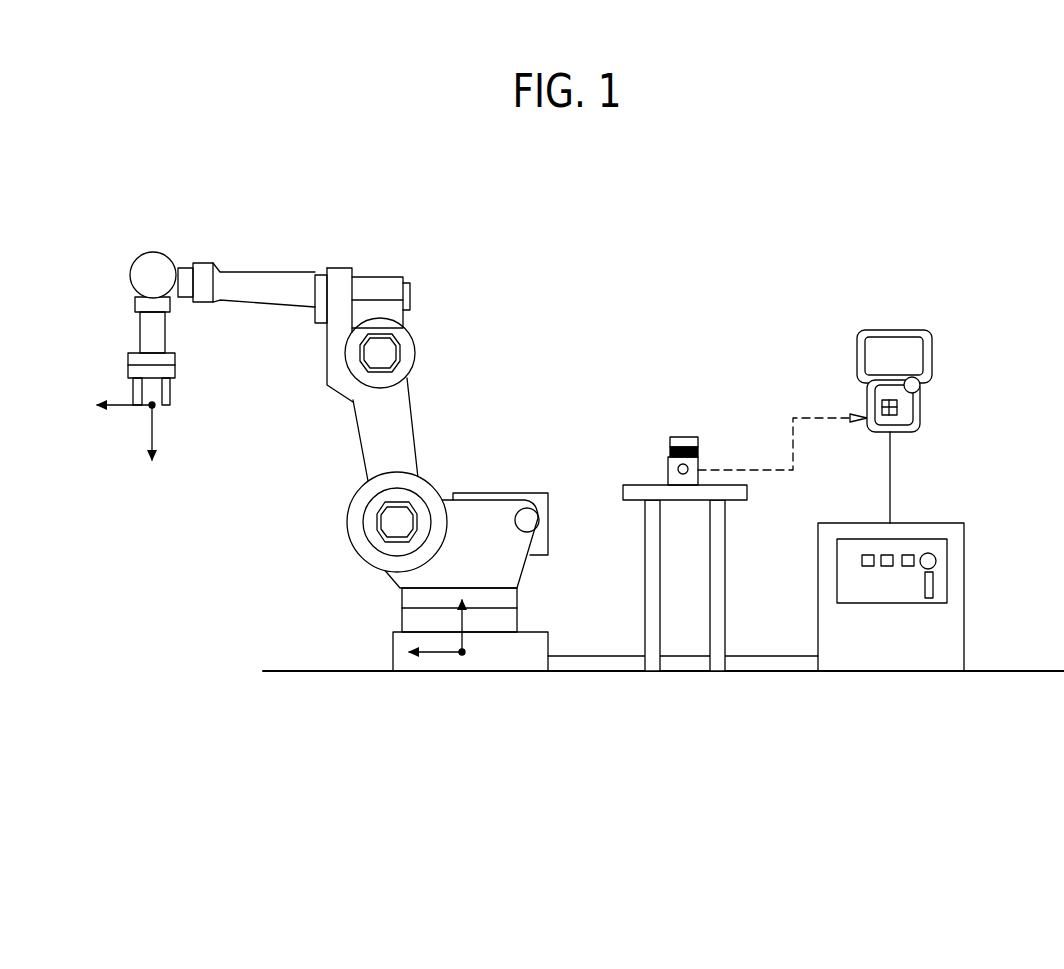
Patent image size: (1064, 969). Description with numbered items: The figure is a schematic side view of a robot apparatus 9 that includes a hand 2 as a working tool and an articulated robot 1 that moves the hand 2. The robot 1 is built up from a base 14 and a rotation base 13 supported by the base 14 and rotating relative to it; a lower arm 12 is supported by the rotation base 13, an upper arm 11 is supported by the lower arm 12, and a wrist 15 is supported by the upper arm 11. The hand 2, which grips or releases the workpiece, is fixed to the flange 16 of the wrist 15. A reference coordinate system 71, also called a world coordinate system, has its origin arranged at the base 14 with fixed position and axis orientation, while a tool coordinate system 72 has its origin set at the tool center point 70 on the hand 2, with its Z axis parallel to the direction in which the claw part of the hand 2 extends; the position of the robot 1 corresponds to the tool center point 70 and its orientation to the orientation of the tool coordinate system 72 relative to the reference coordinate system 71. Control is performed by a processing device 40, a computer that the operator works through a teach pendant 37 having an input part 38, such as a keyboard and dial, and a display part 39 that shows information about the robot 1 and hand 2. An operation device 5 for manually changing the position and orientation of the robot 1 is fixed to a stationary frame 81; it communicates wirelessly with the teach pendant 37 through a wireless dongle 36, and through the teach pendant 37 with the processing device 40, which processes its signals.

The robot 1 is at (341, 262).
The hand 2 is at (168, 373).
The operation device 5 is at (698, 442).
The robot apparatus 9 is at (812, 216).
The upper arm 11 is at (294, 290).
The lower arm 12 is at (400, 395).
The rotation base 13 is at (510, 550).
The base 14 is at (537, 648).
The wrist 15 is at (147, 337).
The flange 16 is at (168, 360).
The wireless dongle 36 is at (862, 425).
The teach pendant 37 is at (862, 408).
The input part 38 is at (898, 403).
The display part 39 is at (910, 352).
The processing device 40 is at (950, 640).
The tool center point 70 is at (155, 407).
The reference coordinate system 71 is at (462, 656).
The tool coordinate system 72 is at (153, 425).
The frame 81 is at (717, 590).